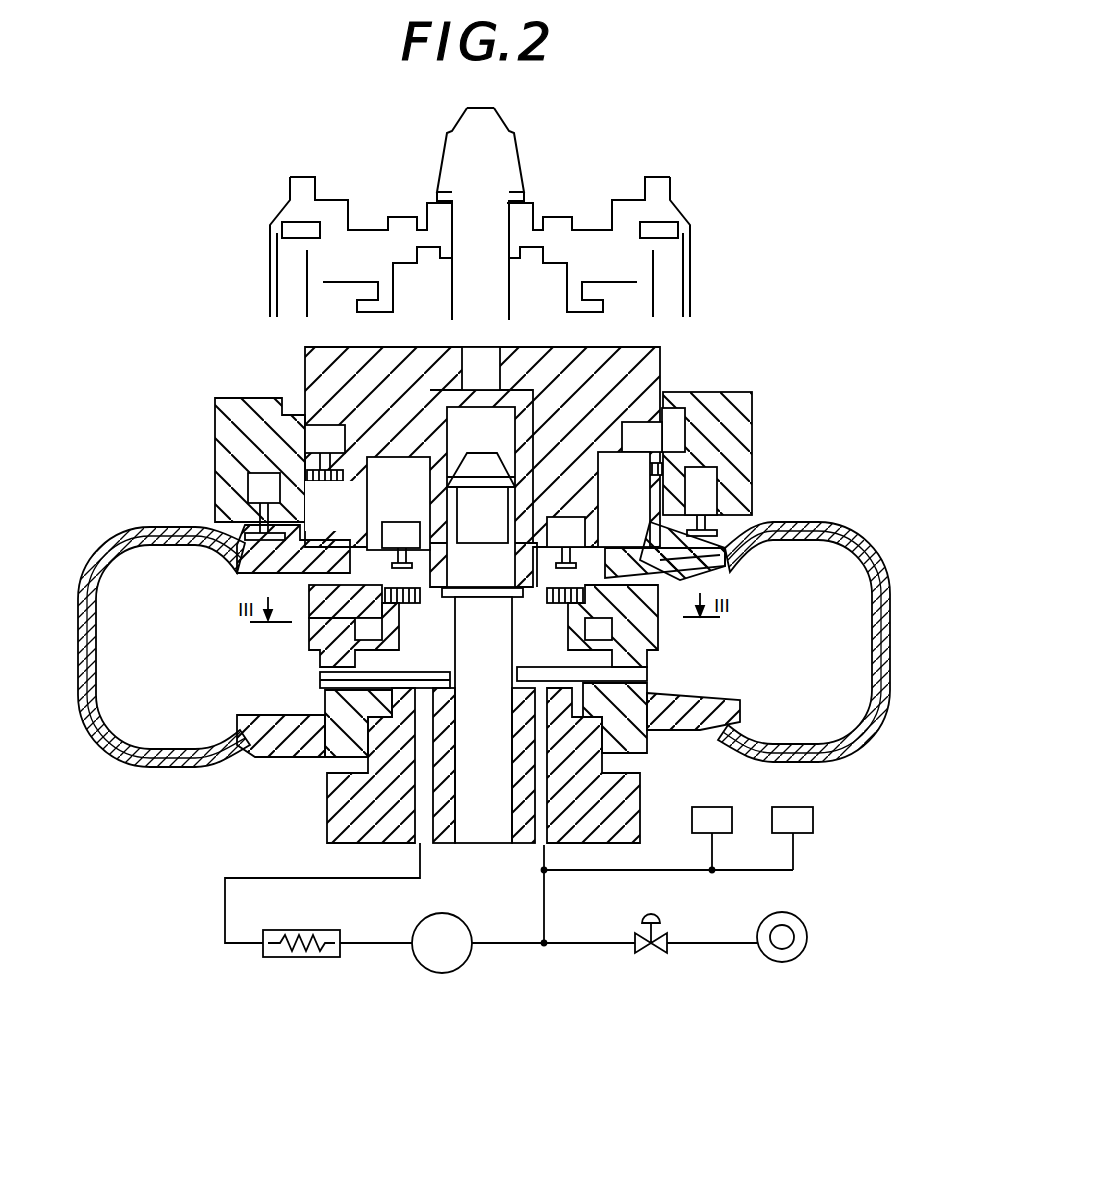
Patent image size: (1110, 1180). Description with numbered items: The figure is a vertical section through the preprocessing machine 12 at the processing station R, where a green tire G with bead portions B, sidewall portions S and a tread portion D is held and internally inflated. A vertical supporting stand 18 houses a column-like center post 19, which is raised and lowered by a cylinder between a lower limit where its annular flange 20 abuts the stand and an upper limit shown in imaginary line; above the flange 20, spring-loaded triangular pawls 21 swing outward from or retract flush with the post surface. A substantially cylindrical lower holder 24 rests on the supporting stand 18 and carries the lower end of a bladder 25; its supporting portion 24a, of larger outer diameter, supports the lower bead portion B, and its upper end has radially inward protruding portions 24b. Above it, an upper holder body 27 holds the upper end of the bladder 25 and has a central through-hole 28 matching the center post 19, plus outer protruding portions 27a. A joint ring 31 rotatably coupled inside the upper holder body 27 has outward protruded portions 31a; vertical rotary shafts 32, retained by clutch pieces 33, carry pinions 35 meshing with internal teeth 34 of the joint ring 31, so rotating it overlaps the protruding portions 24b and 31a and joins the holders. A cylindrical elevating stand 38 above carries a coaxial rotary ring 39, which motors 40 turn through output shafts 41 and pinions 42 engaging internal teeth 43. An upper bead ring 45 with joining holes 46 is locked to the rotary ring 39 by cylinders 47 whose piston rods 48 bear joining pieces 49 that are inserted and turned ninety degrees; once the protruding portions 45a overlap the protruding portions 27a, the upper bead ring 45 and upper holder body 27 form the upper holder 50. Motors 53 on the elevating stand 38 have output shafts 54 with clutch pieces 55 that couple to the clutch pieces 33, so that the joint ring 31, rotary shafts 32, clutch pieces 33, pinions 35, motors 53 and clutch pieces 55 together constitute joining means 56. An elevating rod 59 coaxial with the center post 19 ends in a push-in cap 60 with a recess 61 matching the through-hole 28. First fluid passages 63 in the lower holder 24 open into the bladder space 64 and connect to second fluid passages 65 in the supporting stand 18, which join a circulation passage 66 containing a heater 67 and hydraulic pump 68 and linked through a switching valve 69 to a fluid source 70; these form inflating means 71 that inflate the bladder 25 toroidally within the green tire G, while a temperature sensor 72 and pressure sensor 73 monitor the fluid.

The preprocessing machine 12 is at (722, 380).
The supporting stand 18 is at (343, 815).
The center post 19 is at (476, 835).
The flange 20 is at (502, 598).
The pawls 21 is at (438, 490).
The lower holder 24 is at (683, 697).
The supporting portion 24a is at (255, 757).
The protruding portions 24b is at (315, 633).
The bladder 25 is at (700, 290).
The upper holder body 27 is at (355, 229).
The protruding portions 27a is at (286, 500).
The through-hole 28 is at (467, 540).
The joint ring 31 is at (400, 641).
The protruded portions 31a is at (325, 672).
The rotary shafts 32 is at (345, 601).
The clutch piece 33 is at (620, 600).
The internal teeth 34 is at (553, 603).
The pinion 35 is at (418, 603).
The elevating stand 38 is at (542, 347).
The rotary ring 39 is at (740, 420).
The motors 40 is at (326, 425).
The output shaft 41 is at (346, 472).
The pinion 42 is at (247, 472).
The internal teeth 43 is at (624, 499).
The upper bead ring 45 is at (727, 572).
The protruding portions 45a is at (368, 511).
The joining holes 46 is at (230, 576).
The cylinders 47 is at (710, 478).
The piston rod 48 is at (720, 510).
The joining piece 49 is at (720, 557).
The upper holder 50 is at (565, 216).
The motors 53 is at (597, 505).
The output shaft 54 is at (575, 530).
The clutch piece 55 is at (517, 568).
The joining means 56 is at (406, 657).
The elevating rod 59 is at (481, 345).
The push-in cap 60 is at (428, 392).
The recess 61 is at (463, 441).
The first fluid passages 63 is at (320, 682).
The bladder space 64 is at (815, 680).
The second fluid passages 65 is at (425, 846).
The circulation passage 66 is at (380, 944).
The heater 67 is at (287, 957).
The hydraulic pump 68 is at (463, 965).
The switching valve 69 is at (657, 948).
The fluid source 70 is at (780, 962).
The inflating means 71 is at (213, 886).
The temperature sensor 72 is at (720, 806).
The pressure sensor 73 is at (797, 806).
The processing station R is at (698, 362).
The bead portion B is at (743, 713).
The tread portion D is at (891, 688).
The sidewall portion S is at (848, 752).
The green tire G is at (118, 762).